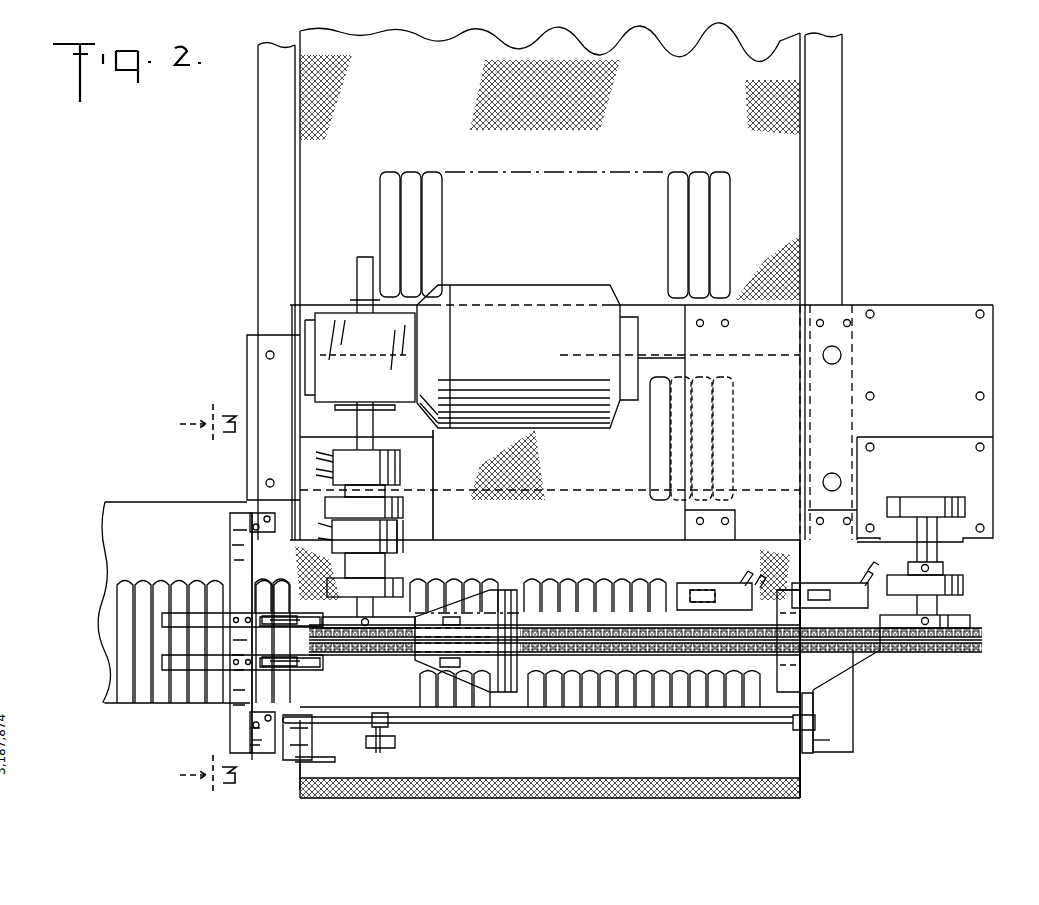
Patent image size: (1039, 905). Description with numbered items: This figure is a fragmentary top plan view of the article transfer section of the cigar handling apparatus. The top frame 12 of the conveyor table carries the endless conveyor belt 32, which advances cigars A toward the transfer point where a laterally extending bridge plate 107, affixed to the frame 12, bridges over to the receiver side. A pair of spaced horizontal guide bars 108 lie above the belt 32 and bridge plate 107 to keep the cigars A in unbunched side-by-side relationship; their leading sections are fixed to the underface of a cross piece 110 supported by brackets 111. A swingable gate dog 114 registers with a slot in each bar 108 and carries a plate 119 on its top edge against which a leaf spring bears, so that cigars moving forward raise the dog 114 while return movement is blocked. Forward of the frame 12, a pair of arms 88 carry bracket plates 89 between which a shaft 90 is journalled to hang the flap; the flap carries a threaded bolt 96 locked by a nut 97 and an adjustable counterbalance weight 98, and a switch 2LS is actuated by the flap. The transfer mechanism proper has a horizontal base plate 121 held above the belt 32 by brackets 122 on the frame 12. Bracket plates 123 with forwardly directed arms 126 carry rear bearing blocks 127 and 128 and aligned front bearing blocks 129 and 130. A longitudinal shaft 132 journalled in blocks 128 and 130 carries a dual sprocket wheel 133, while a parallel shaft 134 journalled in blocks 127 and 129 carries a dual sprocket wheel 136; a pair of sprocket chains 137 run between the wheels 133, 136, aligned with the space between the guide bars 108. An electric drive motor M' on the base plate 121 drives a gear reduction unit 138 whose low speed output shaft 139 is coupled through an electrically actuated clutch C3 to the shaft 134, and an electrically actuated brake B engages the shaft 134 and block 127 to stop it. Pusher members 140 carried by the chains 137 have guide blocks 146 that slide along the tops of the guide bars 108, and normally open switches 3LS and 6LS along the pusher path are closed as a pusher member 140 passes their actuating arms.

The top frame 12 is at (258, 170).
The endless conveyor belt 32 is at (787, 132).
The cigar A is at (725, 218).
The electric drive motor M' is at (551, 367).
The gear reduction unit 138 is at (330, 318).
The low speed output shaft 139 is at (345, 410).
The brackets 122 is at (247, 350).
The horizontal base plate 121 is at (922, 308).
The bracket plates 123 is at (410, 470).
The electrically actuated clutch C3 is at (404, 465).
The rear bearing block 127 is at (418, 498).
The electrically-actuated brake B is at (405, 520).
The forwardly directed arms 126 is at (418, 548).
The longitudinal shaft 134 is at (338, 565).
The front bearing block 129 is at (408, 580).
The bridge plate 107 is at (120, 510).
The guide bars 108 is at (178, 622).
The cross piece 110 is at (238, 533).
The brackets 111 is at (262, 512).
The plate 119 is at (243, 615).
The gate defining dog 114 is at (288, 616).
The dual sprocket wheel 136 is at (352, 640).
The pusher members 140 is at (448, 678).
The guide blocks 146 is at (453, 627).
The nut 97 is at (600, 720).
The sprocket chains 137 is at (770, 640).
The shaft 90 is at (490, 725).
The threaded bolt 96 is at (380, 755).
The counterbalance weight 98 is at (395, 742).
The arms 88 is at (250, 742).
The bracket plates 89 is at (285, 752).
The second switch 2LS is at (300, 770).
The normally open switch 6LS is at (698, 584).
The normally open switch 3LS is at (826, 590).
The rear bearing block 128 is at (965, 505).
The longitudinal shaft 132 is at (930, 540).
The front bearing block 130 is at (960, 585).
The dual sprocket wheel 133 is at (982, 638).